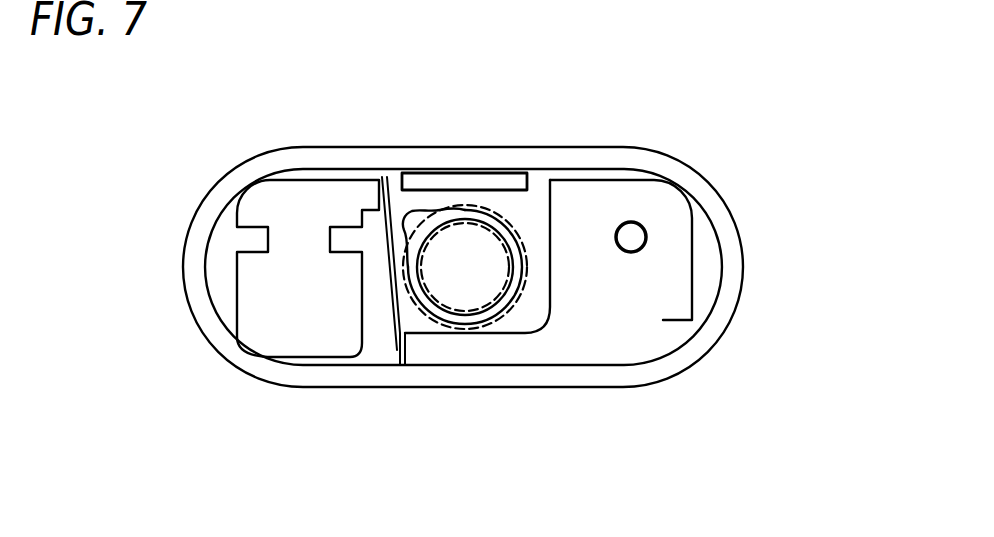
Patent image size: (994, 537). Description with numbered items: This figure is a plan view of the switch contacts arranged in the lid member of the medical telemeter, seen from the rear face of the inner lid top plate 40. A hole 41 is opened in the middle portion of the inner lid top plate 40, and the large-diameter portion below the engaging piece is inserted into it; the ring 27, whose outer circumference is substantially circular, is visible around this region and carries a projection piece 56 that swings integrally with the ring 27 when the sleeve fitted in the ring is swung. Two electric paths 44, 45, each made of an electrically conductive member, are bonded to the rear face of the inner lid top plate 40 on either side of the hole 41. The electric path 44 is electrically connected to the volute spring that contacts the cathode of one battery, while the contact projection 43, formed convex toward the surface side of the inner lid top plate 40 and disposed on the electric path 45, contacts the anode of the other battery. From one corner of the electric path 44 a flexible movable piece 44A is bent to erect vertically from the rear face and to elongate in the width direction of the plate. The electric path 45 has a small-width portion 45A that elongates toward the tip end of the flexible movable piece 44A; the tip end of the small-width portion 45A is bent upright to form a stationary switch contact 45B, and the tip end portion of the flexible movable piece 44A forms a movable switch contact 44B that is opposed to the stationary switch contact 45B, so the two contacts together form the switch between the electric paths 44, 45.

The inner lid top plate 40 is at (738, 262).
The hole 41 is at (494, 250).
The ring 27 is at (455, 205).
The contact projection 43 is at (637, 232).
The electric path 44 is at (258, 330).
The flexible movable piece 44A is at (396, 296).
The movable switch contact 44B is at (397, 350).
The electric path 45 is at (663, 320).
The small-width portion 45A is at (475, 345).
The stationary switch contact 45B is at (420, 365).
The projection piece 56 is at (407, 216).